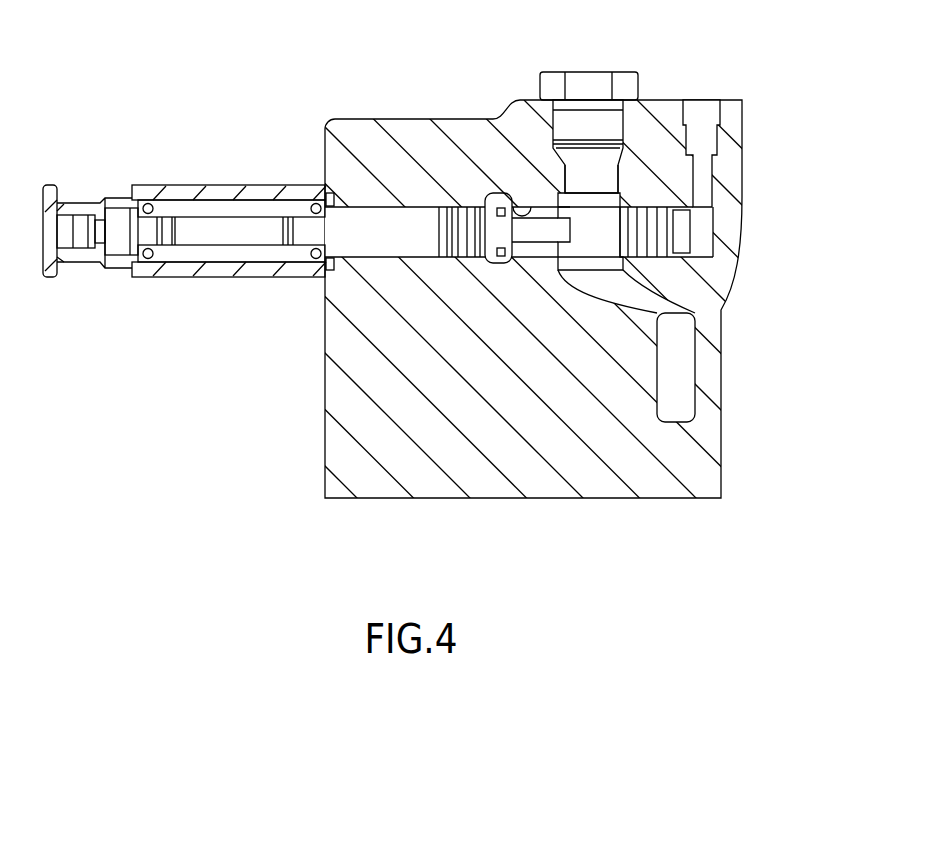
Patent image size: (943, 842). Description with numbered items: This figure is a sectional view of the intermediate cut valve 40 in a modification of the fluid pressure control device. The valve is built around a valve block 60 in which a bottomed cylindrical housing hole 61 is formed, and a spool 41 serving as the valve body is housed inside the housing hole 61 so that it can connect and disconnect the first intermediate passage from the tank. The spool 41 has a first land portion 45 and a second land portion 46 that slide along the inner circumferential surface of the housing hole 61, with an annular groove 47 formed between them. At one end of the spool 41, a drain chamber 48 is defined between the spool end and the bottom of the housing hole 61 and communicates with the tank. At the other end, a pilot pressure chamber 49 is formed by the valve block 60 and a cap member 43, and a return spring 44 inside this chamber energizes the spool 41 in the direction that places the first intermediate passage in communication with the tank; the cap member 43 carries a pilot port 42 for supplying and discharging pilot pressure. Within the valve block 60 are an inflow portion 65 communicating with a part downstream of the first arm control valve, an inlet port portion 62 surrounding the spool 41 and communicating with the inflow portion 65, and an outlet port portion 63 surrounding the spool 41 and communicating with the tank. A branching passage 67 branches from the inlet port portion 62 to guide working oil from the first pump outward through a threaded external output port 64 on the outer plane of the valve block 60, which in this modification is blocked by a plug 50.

The intermediate cut valve 40 is at (350, 175).
The spool 41 is at (605, 200).
The pilot port 42 is at (70, 233).
The cap member 43 is at (200, 185).
The return spring 44 is at (145, 258).
The first land portion 45 is at (412, 230).
The second land portion 46 is at (690, 118).
The annular groove 47 is at (538, 243).
The drain chamber 48 is at (697, 230).
The pilot pressure chamber 49 is at (117, 232).
The plug 50 is at (597, 88).
The valve block 60 is at (682, 457).
The housing hole 61 is at (563, 190).
The inlet port portion 62 is at (595, 263).
The outlet port portion 63 is at (497, 203).
The external output port 64 is at (553, 127).
The inflow portion 65 is at (672, 365).
The branching passage 67 is at (592, 183).